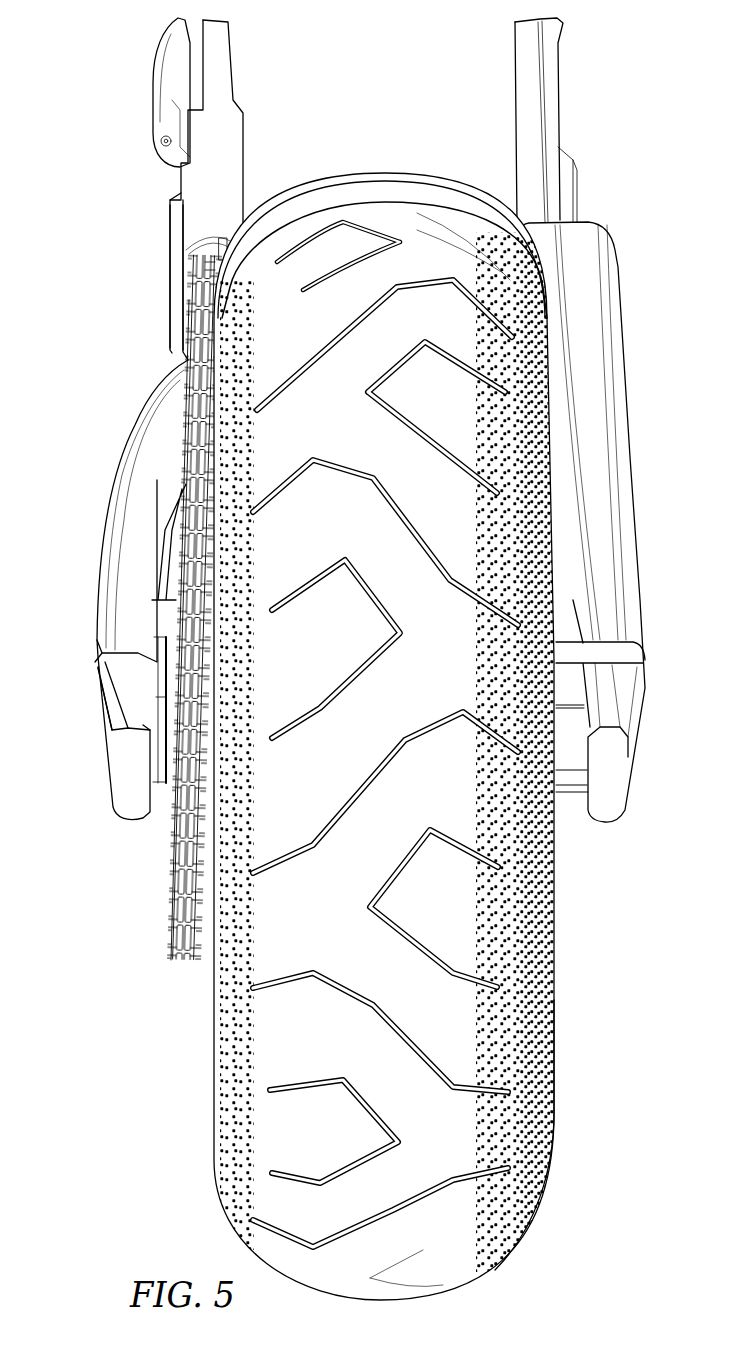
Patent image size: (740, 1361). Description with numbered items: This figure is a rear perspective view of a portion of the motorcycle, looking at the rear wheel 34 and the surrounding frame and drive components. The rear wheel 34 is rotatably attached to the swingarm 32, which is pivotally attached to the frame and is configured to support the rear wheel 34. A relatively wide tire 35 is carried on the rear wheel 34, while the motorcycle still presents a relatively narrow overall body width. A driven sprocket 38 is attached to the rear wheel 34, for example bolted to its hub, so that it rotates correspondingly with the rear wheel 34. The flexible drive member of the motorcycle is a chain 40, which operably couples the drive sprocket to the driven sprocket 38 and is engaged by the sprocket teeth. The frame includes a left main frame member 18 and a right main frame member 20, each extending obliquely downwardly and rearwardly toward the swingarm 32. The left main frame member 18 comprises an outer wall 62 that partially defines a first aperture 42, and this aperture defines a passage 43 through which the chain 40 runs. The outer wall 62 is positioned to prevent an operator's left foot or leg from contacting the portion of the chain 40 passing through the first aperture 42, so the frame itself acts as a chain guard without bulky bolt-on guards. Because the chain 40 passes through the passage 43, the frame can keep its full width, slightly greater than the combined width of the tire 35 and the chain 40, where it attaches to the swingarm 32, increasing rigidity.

The left main frame member 18 is at (233, 61).
The right main frame member 20 is at (558, 72).
The swingarm 32 is at (108, 528).
The rear wheel 34 is at (556, 923).
The tire 35 is at (554, 1058).
The driven sprocket 38 is at (188, 905).
The chain 40 is at (174, 858).
The first aperture 42 is at (188, 251).
The passage 43 is at (200, 251).
The outer wall 62 is at (172, 231).